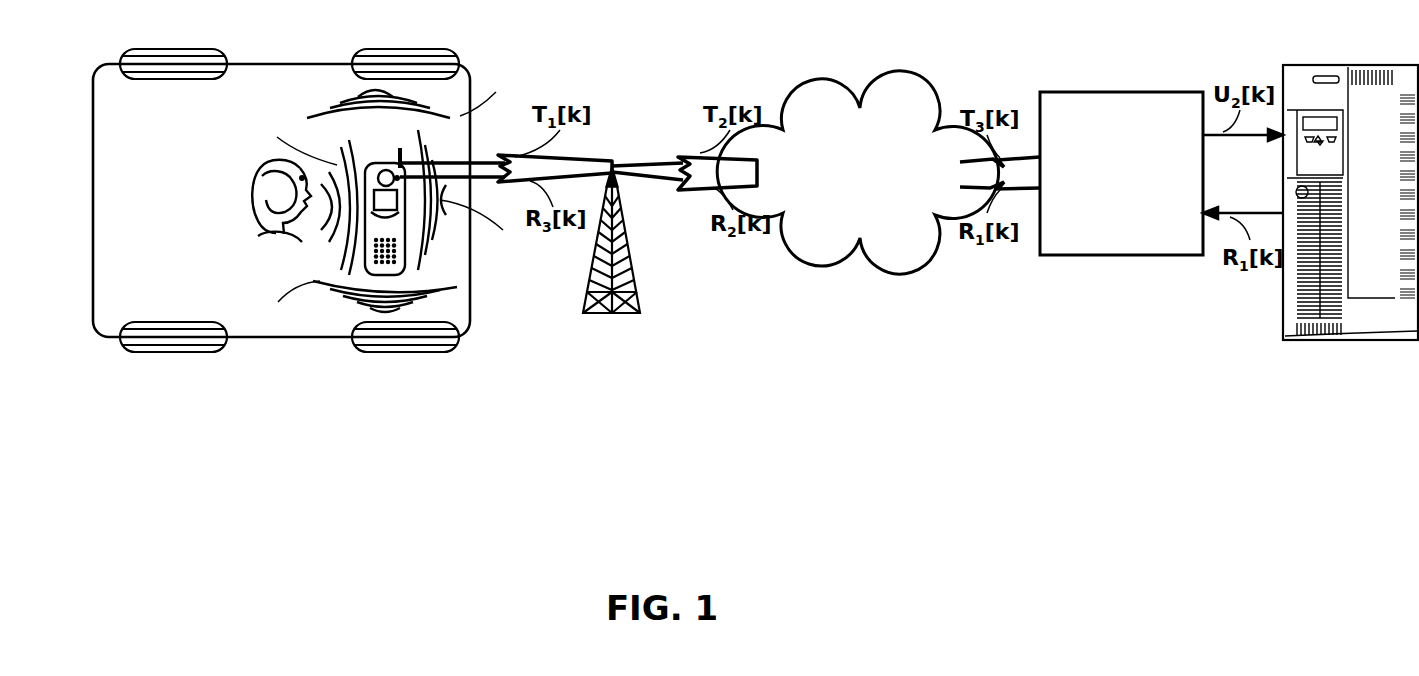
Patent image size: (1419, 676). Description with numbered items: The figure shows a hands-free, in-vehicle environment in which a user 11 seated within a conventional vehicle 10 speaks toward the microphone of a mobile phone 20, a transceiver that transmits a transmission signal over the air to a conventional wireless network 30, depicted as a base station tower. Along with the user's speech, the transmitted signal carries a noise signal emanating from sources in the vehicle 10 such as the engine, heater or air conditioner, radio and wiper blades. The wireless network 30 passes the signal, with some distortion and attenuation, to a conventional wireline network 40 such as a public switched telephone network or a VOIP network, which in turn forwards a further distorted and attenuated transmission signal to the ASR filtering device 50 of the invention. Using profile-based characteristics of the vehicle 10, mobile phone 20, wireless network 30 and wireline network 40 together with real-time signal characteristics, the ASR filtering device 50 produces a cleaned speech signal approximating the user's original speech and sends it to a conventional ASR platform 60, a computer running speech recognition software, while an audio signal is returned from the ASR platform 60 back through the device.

The vehicle 10 is at (272, 63).
The user 11 is at (256, 201).
The mobile phone 20 is at (380, 166).
The wireless network 30 is at (632, 275).
The wireline network 40 is at (843, 217).
The ASR filtering device 50 is at (1138, 234).
The ASR platform 60 is at (1355, 65).